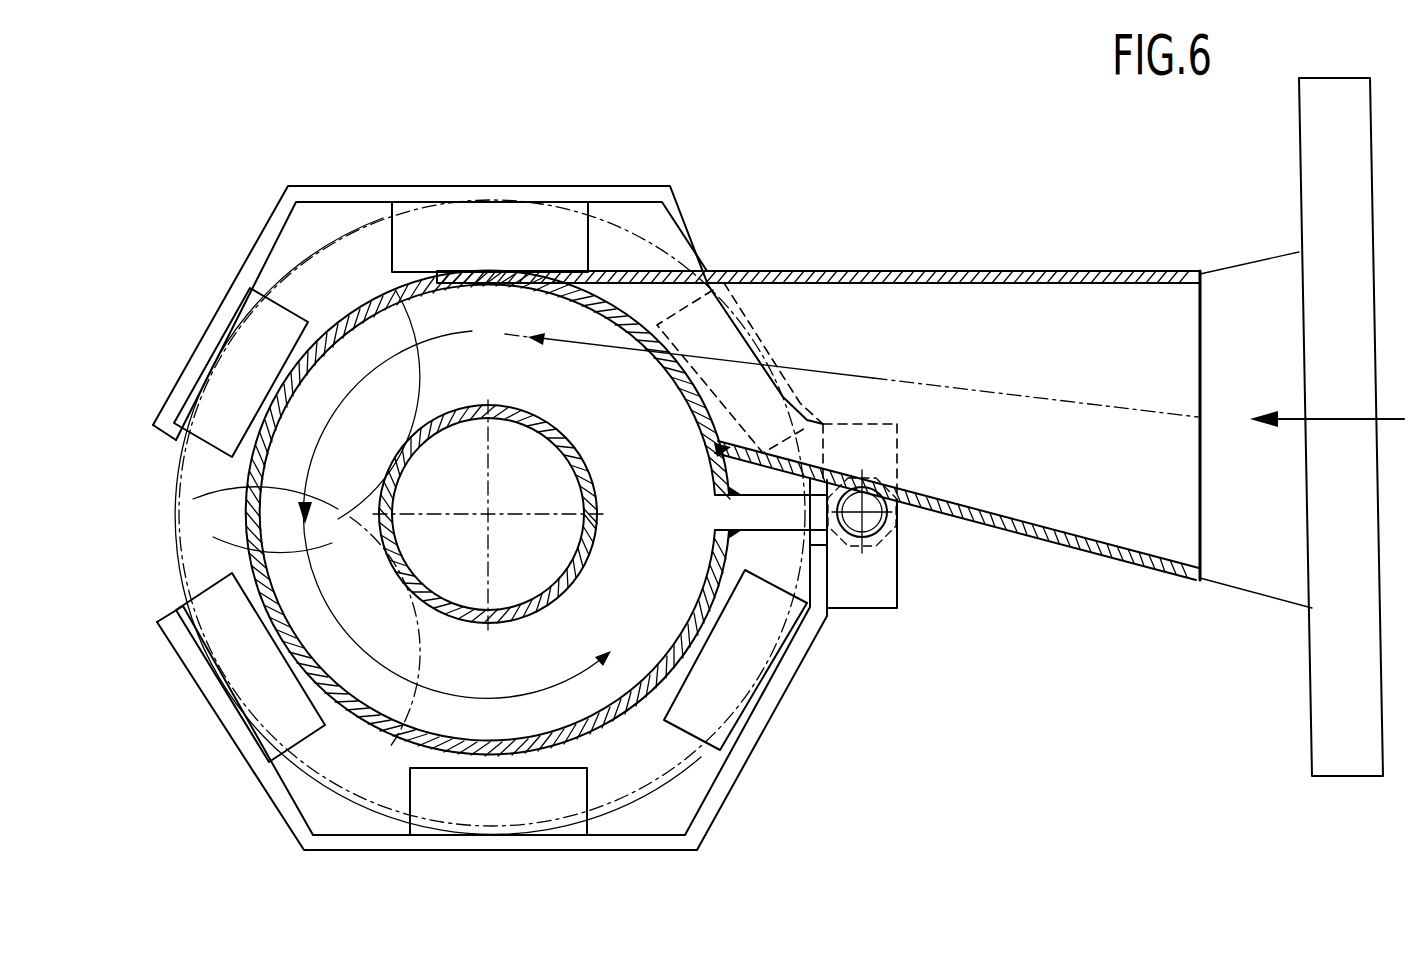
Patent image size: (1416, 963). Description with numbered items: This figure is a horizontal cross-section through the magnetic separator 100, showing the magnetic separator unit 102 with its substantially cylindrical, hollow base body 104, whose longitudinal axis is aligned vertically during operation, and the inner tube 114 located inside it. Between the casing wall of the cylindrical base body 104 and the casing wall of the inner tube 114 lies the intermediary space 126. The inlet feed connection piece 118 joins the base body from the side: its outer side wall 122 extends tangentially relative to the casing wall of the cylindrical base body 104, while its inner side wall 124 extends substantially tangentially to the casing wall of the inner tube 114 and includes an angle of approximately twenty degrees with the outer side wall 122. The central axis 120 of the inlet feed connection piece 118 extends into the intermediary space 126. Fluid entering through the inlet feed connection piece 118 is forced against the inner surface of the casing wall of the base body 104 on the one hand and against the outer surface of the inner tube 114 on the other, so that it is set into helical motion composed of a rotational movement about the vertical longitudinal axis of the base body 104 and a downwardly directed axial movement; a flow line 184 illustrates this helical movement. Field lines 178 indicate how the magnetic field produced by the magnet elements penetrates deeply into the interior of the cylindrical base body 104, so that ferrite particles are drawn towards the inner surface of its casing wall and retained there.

The magnetic separator 100 is at (769, 495).
The magnetic separator unit 102 is at (525, 549).
The base body 104 is at (536, 556).
The inner tube 114 is at (621, 567).
The inlet feed connection piece 118 is at (815, 202).
The central axis 120 is at (851, 375).
The outer side wall 122 is at (818, 201).
The inner side wall 124 is at (957, 537).
The intermediary space 126 is at (348, 420).
The field lines 178 is at (490, 466).
The flow line 184 is at (585, 495).